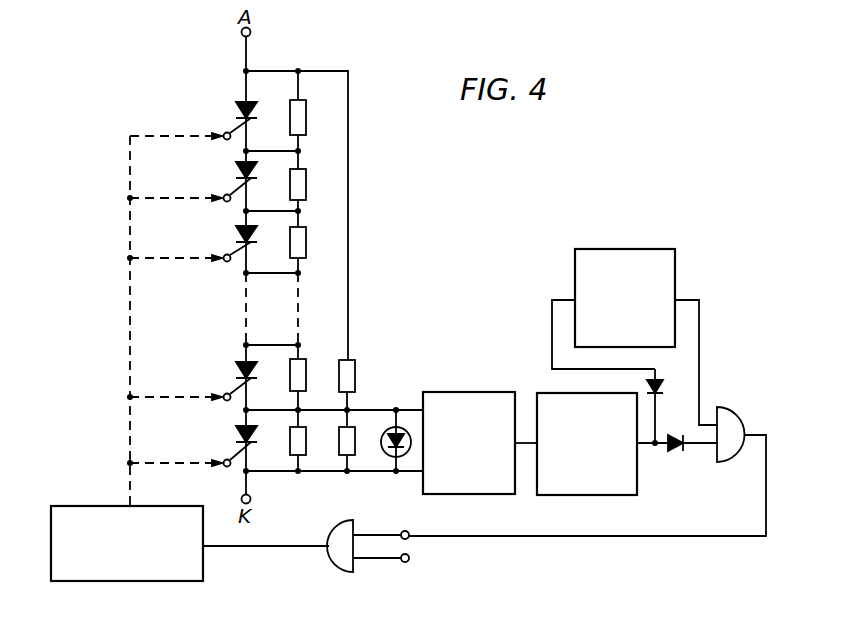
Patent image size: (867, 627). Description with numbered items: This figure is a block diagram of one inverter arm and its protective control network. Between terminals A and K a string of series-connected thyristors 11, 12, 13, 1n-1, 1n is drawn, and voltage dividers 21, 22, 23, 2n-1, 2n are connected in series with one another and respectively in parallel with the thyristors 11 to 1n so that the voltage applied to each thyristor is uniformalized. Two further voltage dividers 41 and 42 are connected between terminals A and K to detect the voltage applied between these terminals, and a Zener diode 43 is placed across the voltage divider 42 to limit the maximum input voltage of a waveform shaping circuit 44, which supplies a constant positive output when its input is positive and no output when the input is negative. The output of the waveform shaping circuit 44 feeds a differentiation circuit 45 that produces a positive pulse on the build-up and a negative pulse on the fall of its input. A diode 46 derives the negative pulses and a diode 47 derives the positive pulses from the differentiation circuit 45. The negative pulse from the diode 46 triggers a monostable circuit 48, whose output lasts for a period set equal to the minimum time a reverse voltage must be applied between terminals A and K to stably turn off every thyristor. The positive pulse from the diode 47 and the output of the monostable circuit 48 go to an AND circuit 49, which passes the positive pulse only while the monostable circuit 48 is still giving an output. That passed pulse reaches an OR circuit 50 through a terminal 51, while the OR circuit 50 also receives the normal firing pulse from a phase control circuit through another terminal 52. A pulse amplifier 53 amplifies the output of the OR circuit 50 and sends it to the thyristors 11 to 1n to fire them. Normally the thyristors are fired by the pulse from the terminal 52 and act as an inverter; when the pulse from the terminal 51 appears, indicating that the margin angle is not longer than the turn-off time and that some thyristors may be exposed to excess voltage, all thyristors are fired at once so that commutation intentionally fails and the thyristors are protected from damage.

The thyristor 11 is at (226, 121).
The thyristor 12 is at (226, 182).
The thyristor 13 is at (226, 244).
The thyristor 1n-1 is at (217, 381).
The thyristor 1n is at (226, 446).
The voltage divider 21 is at (306, 116).
The voltage divider 22 is at (306, 183).
The voltage divider 23 is at (306, 245).
The voltage divider 2n-1 is at (306, 372).
The voltage divider 2n is at (306, 438).
The voltage divider 41 is at (355, 378).
The voltage divider 42 is at (338, 452).
The Zener diode 43 is at (390, 455).
The waveform shaping circuit 44 is at (475, 392).
The differentiation circuit 45 is at (618, 495).
The diode 46 is at (668, 389).
The diode 47 is at (675, 452).
The monostable circuit 48 is at (675, 278).
The AND circuit 49 is at (738, 413).
The OR circuit 50 is at (325, 567).
The terminal 51 is at (407, 523).
The terminal 52 is at (407, 574).
The pulse amplifier 53 is at (85, 506).